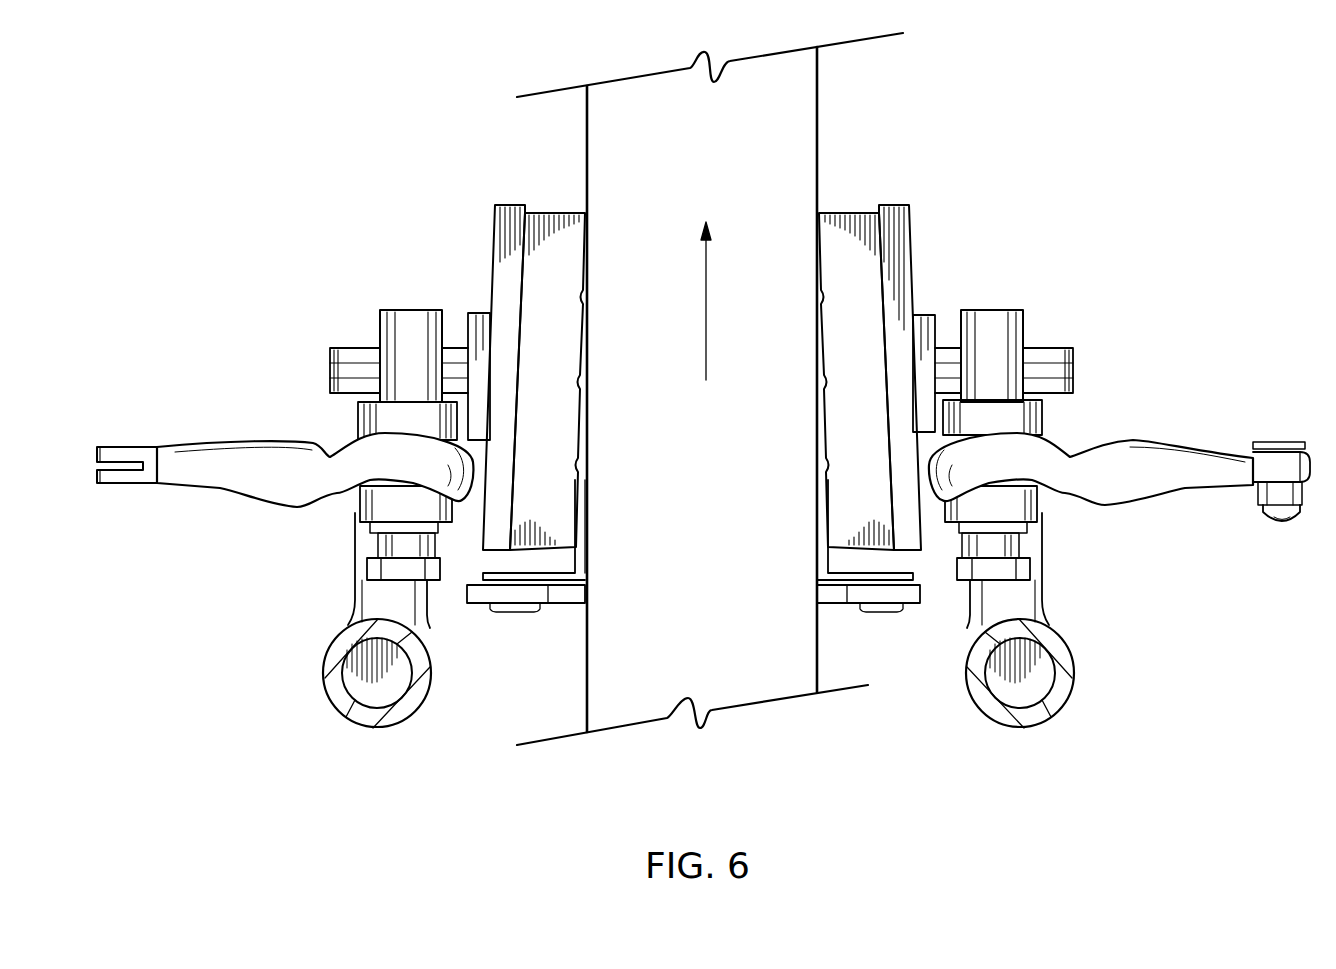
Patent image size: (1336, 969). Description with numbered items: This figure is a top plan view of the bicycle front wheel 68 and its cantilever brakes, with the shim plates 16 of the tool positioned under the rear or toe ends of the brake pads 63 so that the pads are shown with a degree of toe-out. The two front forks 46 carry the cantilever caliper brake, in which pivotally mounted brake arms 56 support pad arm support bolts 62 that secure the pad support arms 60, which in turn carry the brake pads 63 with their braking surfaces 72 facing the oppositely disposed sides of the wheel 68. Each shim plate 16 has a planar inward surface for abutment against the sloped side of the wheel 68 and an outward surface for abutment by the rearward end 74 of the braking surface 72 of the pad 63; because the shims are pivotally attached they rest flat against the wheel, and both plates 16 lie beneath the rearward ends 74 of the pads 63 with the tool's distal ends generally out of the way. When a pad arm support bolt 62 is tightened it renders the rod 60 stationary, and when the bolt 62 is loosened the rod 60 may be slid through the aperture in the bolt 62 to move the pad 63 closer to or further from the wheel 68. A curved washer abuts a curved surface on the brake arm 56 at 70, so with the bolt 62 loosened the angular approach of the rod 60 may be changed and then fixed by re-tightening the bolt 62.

The shim plate 16 is at (812, 570).
The front fork 46 is at (337, 703).
The brake arm 56 is at (197, 483).
The pad support arm 60 is at (348, 365).
The pad arm support bolt 62 is at (413, 308).
The brake pad 63 is at (555, 213).
The wheel 68 is at (820, 88).
The curved washer abutment 70 is at (413, 437).
The braking surface 72 is at (823, 435).
The rearward end of brake pad 74 is at (537, 550).